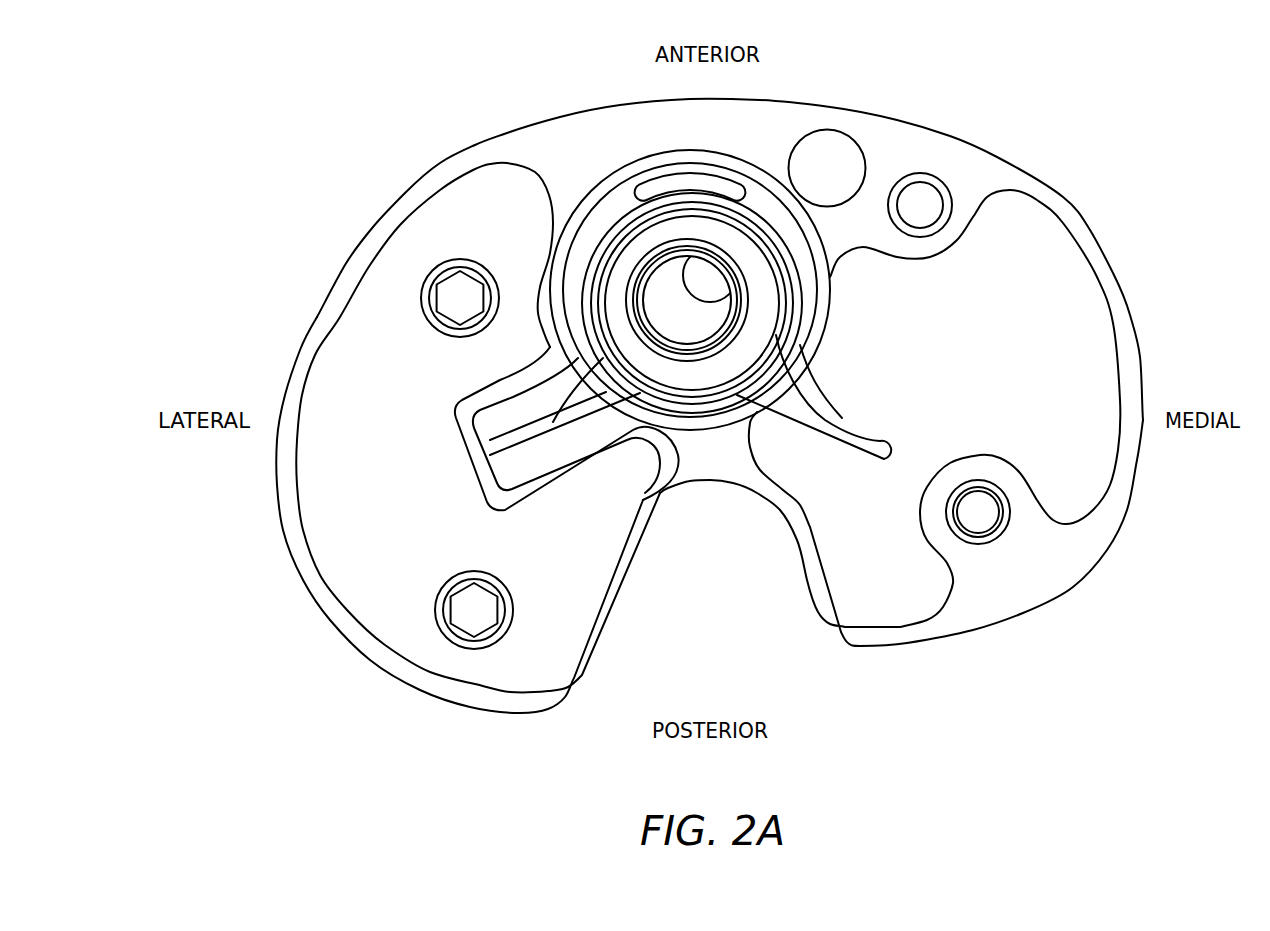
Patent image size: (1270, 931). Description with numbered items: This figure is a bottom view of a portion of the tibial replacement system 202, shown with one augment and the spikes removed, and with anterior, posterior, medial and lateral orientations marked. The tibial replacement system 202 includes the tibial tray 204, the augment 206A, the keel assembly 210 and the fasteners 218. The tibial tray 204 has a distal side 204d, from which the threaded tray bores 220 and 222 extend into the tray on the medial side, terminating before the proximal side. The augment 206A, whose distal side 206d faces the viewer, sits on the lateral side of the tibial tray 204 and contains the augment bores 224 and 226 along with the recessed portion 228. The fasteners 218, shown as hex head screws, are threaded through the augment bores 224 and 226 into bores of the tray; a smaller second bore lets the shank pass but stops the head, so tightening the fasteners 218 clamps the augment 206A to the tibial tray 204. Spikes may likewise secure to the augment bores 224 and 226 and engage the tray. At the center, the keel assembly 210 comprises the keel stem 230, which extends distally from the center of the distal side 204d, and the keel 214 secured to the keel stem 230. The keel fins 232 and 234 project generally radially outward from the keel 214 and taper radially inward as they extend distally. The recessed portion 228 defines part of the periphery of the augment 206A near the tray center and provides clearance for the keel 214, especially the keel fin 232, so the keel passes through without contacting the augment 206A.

The tibial replacement system 202 is at (320, 66).
The tibial tray 204 is at (1136, 309).
The distal side 204d is at (1073, 543).
The augment 206A is at (296, 312).
The distal side 206d is at (328, 592).
The keel assembly 210 is at (617, 162).
The keel 214 is at (688, 150).
The fasteners 218 is at (457, 300).
The tray bore 220 is at (920, 217).
The tray bore 222 is at (983, 525).
The augment bore 224 is at (466, 262).
The augment bore 226 is at (475, 650).
The recessed portion 228 is at (545, 457).
The keel stem 230 is at (742, 316).
The keel fin 232 is at (505, 412).
The keel fin 234 is at (868, 428).